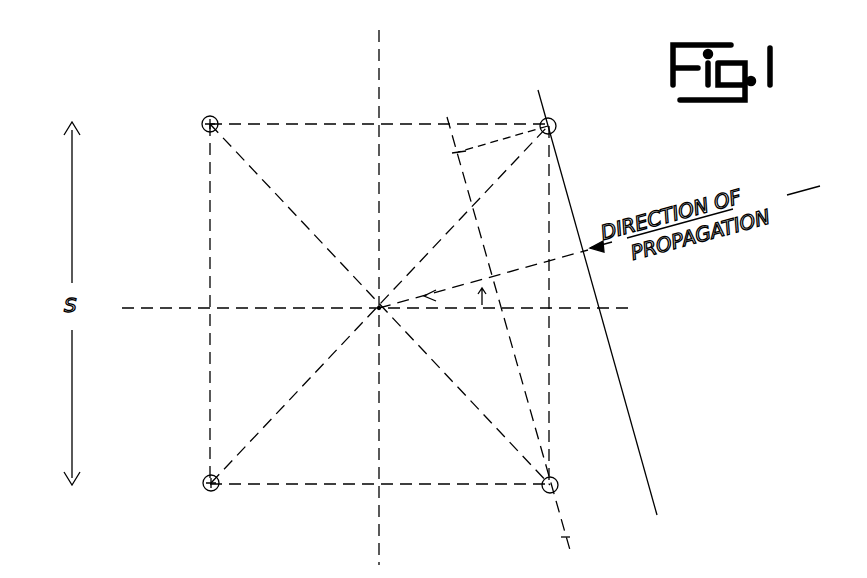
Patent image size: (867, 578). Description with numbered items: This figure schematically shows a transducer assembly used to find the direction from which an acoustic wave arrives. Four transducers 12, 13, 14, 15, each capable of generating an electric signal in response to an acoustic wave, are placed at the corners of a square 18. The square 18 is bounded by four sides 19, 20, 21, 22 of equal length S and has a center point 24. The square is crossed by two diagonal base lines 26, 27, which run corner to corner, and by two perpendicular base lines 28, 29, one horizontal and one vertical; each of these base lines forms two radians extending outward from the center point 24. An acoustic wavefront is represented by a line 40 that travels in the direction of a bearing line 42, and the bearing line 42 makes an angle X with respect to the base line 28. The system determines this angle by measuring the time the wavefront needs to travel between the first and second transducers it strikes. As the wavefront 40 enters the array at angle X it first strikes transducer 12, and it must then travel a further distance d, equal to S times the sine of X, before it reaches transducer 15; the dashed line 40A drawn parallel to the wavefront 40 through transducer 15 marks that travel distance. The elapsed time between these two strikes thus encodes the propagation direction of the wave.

The transducer 12 is at (556, 126).
The transducer 13 is at (211, 116).
The transducer 14 is at (203, 483).
The transducer 15 is at (560, 485).
The square 18 is at (323, 105).
The side 19 is at (392, 122).
The side 20 is at (208, 228).
The side 21 is at (355, 486).
The side 22 is at (553, 456).
The center point 24 is at (376, 307).
The diagonal base line 26 is at (292, 190).
The diagonal base line 27 is at (312, 380).
The perpendicular base line 28 is at (182, 302).
The perpendicular base line 29 is at (383, 78).
The wavefront 40 is at (657, 515).
The wavefront parallel line 40A is at (572, 537).
The bearing line 42 is at (510, 268).